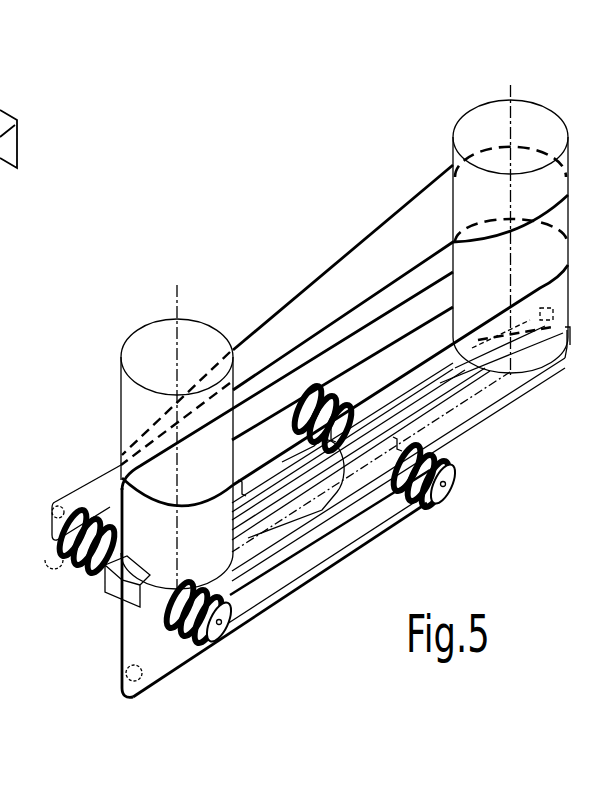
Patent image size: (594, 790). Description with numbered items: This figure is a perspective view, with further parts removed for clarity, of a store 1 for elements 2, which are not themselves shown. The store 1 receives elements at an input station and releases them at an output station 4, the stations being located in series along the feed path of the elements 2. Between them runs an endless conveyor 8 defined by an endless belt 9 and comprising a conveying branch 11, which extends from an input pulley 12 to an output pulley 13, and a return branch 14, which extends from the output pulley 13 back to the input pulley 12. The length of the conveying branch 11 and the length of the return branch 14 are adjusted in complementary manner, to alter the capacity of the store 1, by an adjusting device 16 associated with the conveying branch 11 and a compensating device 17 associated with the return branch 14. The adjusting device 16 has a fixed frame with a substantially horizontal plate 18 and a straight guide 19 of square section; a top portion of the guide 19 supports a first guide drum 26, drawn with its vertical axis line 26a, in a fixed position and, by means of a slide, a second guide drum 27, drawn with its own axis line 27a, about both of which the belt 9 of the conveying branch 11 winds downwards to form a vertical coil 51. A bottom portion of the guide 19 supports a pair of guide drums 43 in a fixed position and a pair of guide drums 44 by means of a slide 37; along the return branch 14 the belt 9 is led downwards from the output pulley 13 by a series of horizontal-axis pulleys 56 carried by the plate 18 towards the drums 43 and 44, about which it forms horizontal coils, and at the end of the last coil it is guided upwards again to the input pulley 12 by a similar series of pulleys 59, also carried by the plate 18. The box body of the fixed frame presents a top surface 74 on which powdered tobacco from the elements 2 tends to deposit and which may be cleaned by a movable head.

The store 1 is at (343, 238).
The elements 2 is at (567, 348).
The output station 4 is at (2, 270).
The endless conveyor 8 is at (230, 656).
The endless belt 9 is at (423, 508).
The conveying branch 11 is at (303, 270).
The input pulley 12 is at (113, 592).
The output pulley 13 is at (60, 508).
The return branch 14 is at (327, 587).
The adjusting device 16 is at (557, 380).
The compensating device 17 is at (370, 587).
The plate 18 is at (2, 112).
The straight guide 19 is at (443, 387).
The guide drum 26 is at (143, 345).
The roller axis 26a is at (181, 310).
The guide drum 27 is at (543, 118).
The roller axis 27a is at (517, 92).
The slide 37 is at (390, 445).
The guide drums 43 is at (75, 567).
The guide drums 44 is at (340, 395).
The vertical coil 51 is at (390, 195).
The pulleys 56 is at (55, 552).
The pulleys 59 is at (143, 693).
The top surface 74 is at (12, 51).